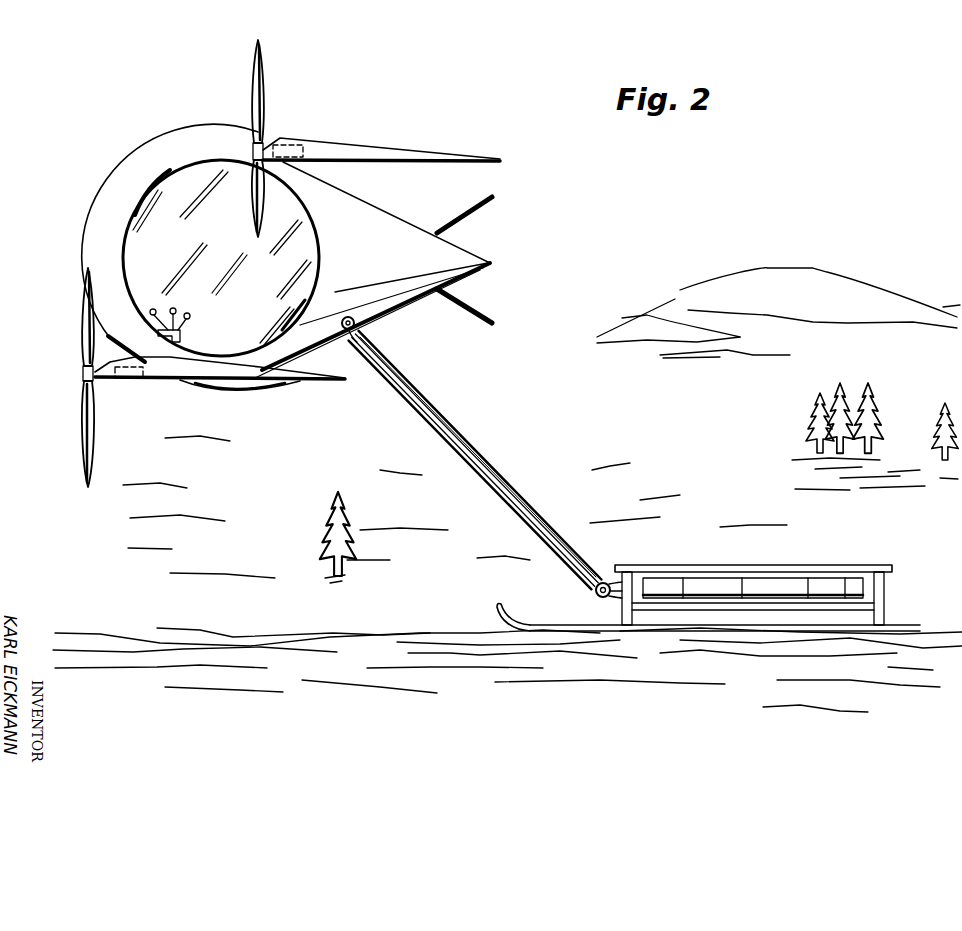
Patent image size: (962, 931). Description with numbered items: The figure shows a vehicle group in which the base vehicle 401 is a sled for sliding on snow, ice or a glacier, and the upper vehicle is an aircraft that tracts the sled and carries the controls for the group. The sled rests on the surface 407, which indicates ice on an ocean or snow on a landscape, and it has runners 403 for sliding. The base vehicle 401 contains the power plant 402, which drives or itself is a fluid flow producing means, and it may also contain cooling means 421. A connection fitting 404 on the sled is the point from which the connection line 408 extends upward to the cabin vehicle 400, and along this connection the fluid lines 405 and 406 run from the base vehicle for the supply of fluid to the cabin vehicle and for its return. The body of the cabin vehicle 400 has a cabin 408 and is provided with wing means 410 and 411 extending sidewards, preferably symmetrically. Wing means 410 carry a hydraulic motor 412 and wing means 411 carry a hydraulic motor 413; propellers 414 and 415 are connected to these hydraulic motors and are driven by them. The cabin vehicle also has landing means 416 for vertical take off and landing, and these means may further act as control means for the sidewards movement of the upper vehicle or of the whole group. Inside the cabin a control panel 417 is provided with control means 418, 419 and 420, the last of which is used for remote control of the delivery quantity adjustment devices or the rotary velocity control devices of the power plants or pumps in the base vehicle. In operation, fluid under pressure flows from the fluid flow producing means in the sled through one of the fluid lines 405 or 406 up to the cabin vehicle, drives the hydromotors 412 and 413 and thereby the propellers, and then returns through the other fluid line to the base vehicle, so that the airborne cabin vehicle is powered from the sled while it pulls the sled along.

The cabin vehicle 400 is at (363, 197).
The base vehicle 401 is at (665, 582).
The power plant 402 is at (718, 582).
The runners 403 is at (532, 623).
The connection fitting 404 is at (608, 580).
The fluid line 405 is at (442, 438).
The fluid line 406 is at (482, 457).
The surface 407 is at (423, 637).
The connection line 408 is at (138, 205).
The wing means 410 is at (155, 370).
The wing means 411 is at (345, 143).
The hydraulic motor 412 is at (125, 380).
The hydraulic motor 413 is at (292, 143).
The propeller 414 is at (88, 333).
The propeller 415 is at (252, 95).
The landing means 416 is at (487, 207).
The control panel 417 is at (184, 342).
The control means 418 is at (153, 309).
The control means 419 is at (173, 308).
The control means 420 is at (190, 315).
The cooling means 421 is at (840, 580).